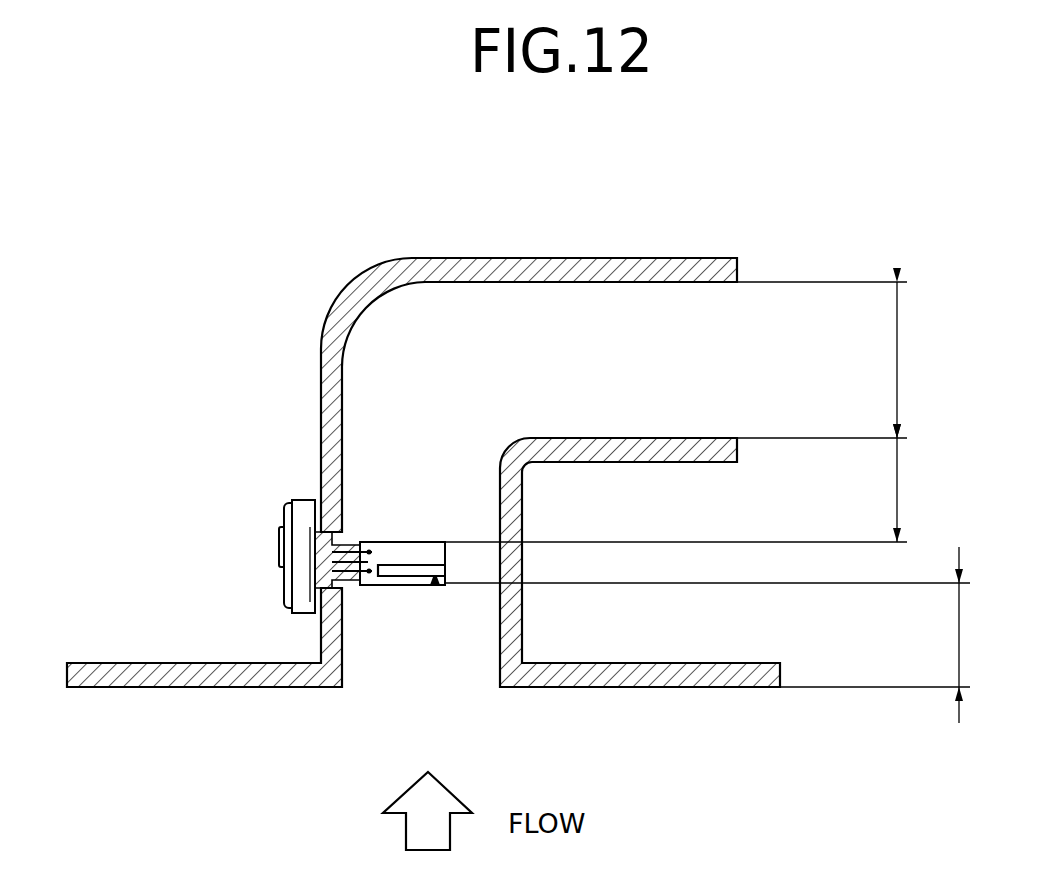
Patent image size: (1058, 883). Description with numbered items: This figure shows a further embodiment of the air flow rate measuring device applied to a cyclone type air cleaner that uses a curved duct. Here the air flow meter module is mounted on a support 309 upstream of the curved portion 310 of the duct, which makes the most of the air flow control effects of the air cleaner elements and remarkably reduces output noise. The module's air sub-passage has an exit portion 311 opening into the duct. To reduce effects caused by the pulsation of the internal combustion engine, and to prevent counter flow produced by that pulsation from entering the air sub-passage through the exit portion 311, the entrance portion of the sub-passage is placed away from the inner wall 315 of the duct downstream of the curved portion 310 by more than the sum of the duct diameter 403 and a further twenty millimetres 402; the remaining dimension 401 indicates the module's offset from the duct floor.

The support wall 309 is at (342, 638).
The curved portion 310 is at (348, 292).
The exit portion 311 is at (446, 553).
The inner wall 315 is at (529, 366).
The dimension 401 is at (707, 635).
The distance of 20 mm 402 is at (676, 490).
The diameter of the duct 403 is at (822, 360).